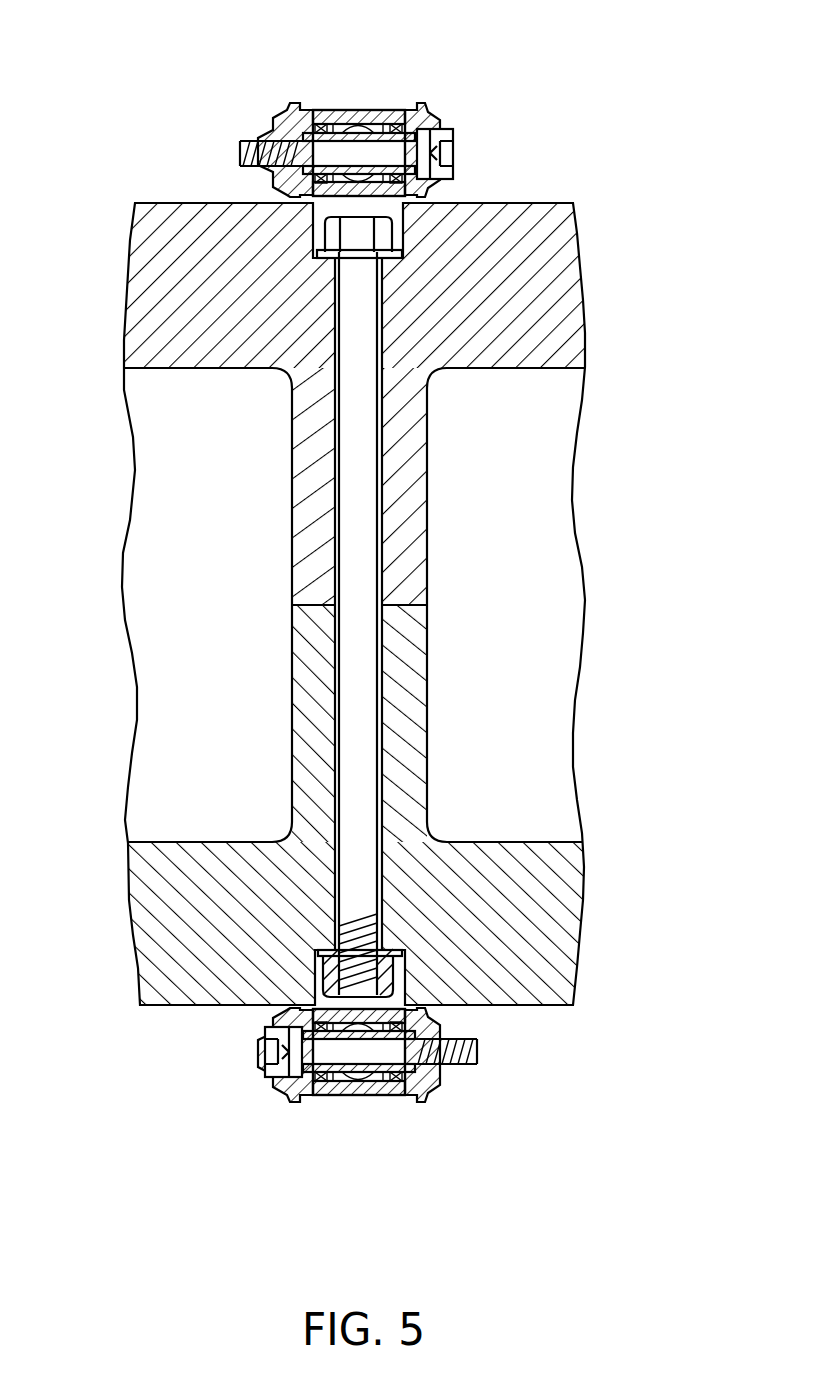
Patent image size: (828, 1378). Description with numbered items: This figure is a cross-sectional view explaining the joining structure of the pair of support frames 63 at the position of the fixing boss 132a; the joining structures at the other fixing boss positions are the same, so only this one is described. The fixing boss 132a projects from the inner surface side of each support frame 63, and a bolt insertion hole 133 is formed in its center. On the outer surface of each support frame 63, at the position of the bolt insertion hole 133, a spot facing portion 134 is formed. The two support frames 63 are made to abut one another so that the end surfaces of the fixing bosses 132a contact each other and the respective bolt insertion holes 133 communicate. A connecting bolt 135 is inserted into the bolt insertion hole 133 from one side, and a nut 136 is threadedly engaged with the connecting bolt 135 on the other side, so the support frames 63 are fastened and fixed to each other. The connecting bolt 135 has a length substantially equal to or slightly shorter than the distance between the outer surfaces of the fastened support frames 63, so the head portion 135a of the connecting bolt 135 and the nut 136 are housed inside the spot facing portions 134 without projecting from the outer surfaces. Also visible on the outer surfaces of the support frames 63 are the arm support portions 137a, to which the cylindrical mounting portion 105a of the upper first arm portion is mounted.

The support frame 63 is at (567, 276).
The fixing boss 132a is at (413, 492).
The bolt insertion hole 133 is at (382, 456).
The spot facing portion 134 is at (322, 240).
The connecting bolt 135 is at (355, 583).
The head portion 135a is at (380, 235).
The nut 136 is at (385, 972).
The arm support portion 137a is at (293, 104).
The cylindrical mounting portion 105a is at (320, 110).